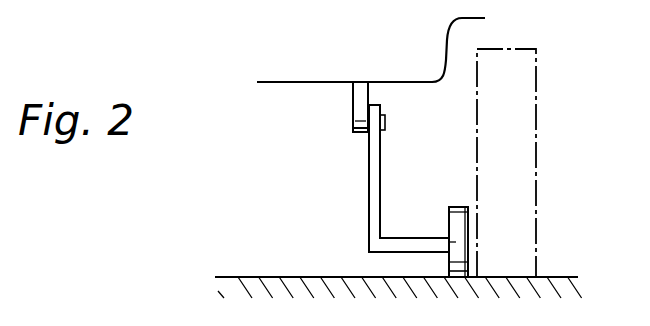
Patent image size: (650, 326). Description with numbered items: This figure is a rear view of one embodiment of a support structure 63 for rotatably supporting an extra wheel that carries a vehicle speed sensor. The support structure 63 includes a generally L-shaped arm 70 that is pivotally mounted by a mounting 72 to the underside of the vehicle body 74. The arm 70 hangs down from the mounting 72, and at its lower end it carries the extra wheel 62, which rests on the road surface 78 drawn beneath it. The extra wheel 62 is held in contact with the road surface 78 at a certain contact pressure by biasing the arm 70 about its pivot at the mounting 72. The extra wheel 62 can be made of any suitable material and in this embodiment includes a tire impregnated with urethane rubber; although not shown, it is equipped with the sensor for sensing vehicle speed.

The vehicle body 74 is at (305, 80).
The mounting 72 is at (351, 107).
The L-shaped arm 70 is at (368, 186).
The support structure 63 is at (341, 167).
The extra wheel 62 is at (456, 271).
The road surface 78 is at (269, 276).